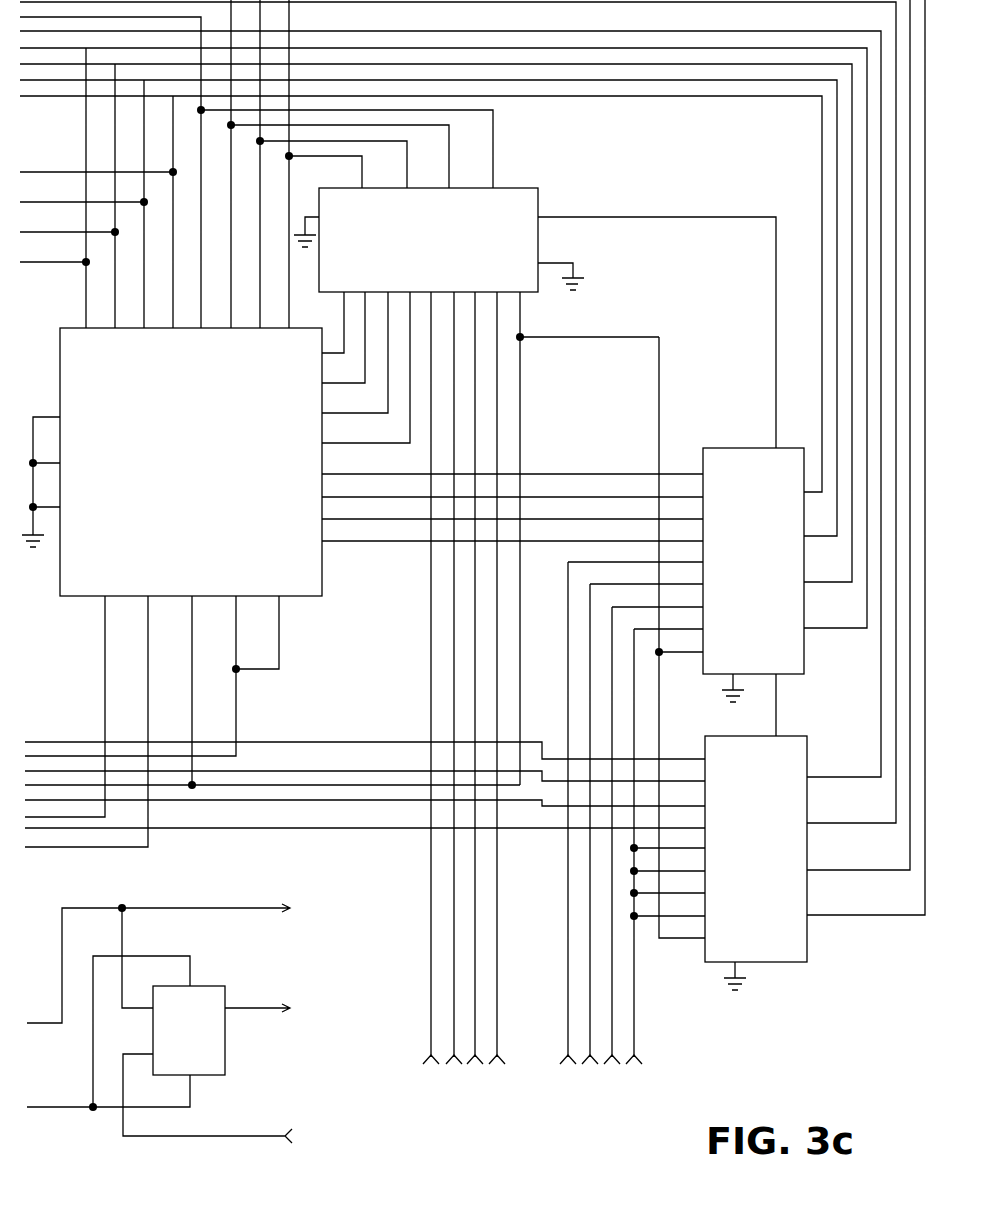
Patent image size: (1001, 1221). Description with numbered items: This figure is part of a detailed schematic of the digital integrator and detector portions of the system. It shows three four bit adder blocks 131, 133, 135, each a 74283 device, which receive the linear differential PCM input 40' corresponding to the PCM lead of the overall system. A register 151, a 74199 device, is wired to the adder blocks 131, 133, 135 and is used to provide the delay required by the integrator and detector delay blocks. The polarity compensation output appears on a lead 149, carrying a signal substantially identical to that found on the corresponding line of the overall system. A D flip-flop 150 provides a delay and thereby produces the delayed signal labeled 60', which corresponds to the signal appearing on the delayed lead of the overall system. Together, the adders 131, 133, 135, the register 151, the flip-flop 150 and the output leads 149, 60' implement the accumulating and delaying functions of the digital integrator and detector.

The four bit adder block 131 is at (521, 189).
The four bit adder block 133 is at (730, 446).
The four bit adder block 135 is at (706, 736).
The register 151 is at (322, 565).
The lead 149 is at (212, 905).
The delayed signal lead 60' is at (299, 987).
The D flip-flop 150 is at (225, 1043).
The linear differential PCM input 40' is at (532, 1099).